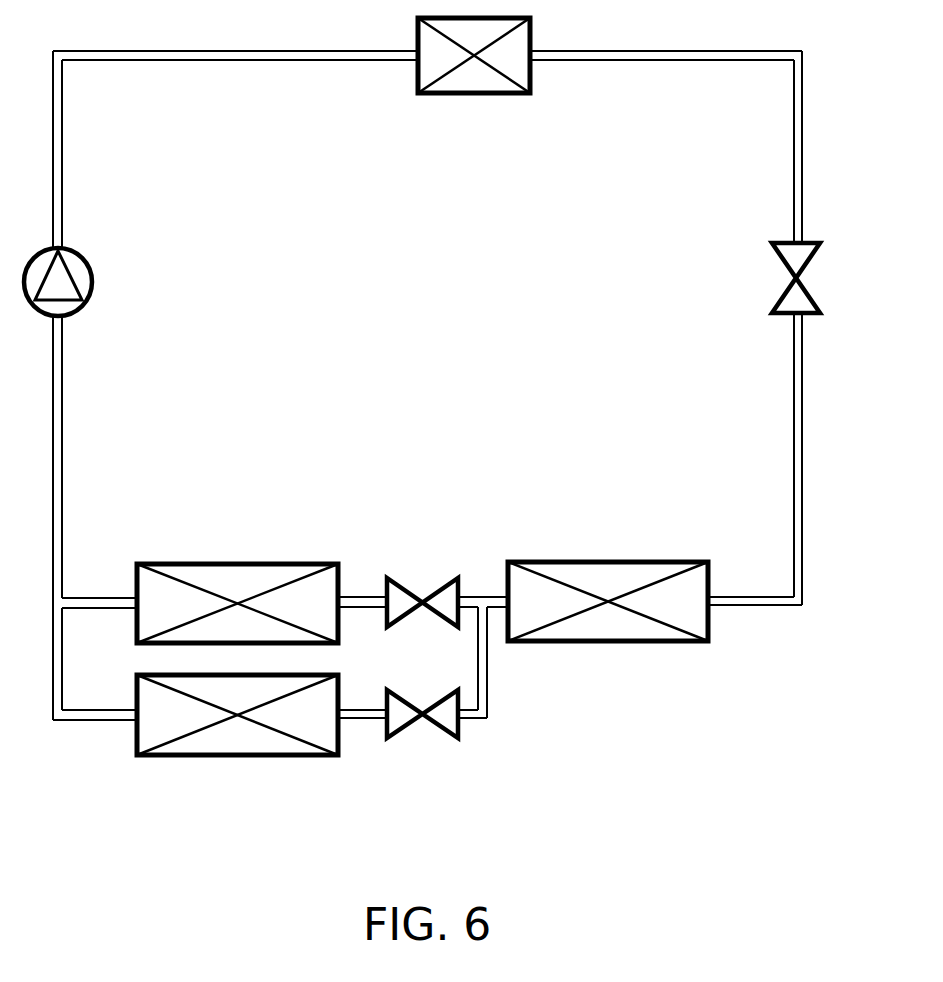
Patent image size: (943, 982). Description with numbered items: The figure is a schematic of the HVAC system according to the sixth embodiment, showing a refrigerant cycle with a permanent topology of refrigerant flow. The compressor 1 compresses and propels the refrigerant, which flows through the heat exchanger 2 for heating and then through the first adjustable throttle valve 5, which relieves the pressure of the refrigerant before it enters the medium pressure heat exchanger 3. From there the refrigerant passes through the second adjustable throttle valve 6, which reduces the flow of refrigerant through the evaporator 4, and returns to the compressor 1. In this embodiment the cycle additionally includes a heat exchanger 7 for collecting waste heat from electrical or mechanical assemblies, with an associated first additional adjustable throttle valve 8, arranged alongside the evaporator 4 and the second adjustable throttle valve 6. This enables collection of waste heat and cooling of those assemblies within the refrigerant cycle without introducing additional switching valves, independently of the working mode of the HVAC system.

The compressor 1 is at (93, 267).
The heat exchanger for heating 2 is at (514, 47).
The medium pressure heat exchanger 3 is at (640, 602).
The evaporator 4 is at (184, 600).
The first adjustable throttle valve 5 is at (800, 258).
The second adjustable throttle valve 6 is at (445, 598).
The heat exchanger for the collected waste heat from electrical or mechanical assemb 7 is at (233, 732).
The first additional adjustable throttle valve 8 is at (450, 713).